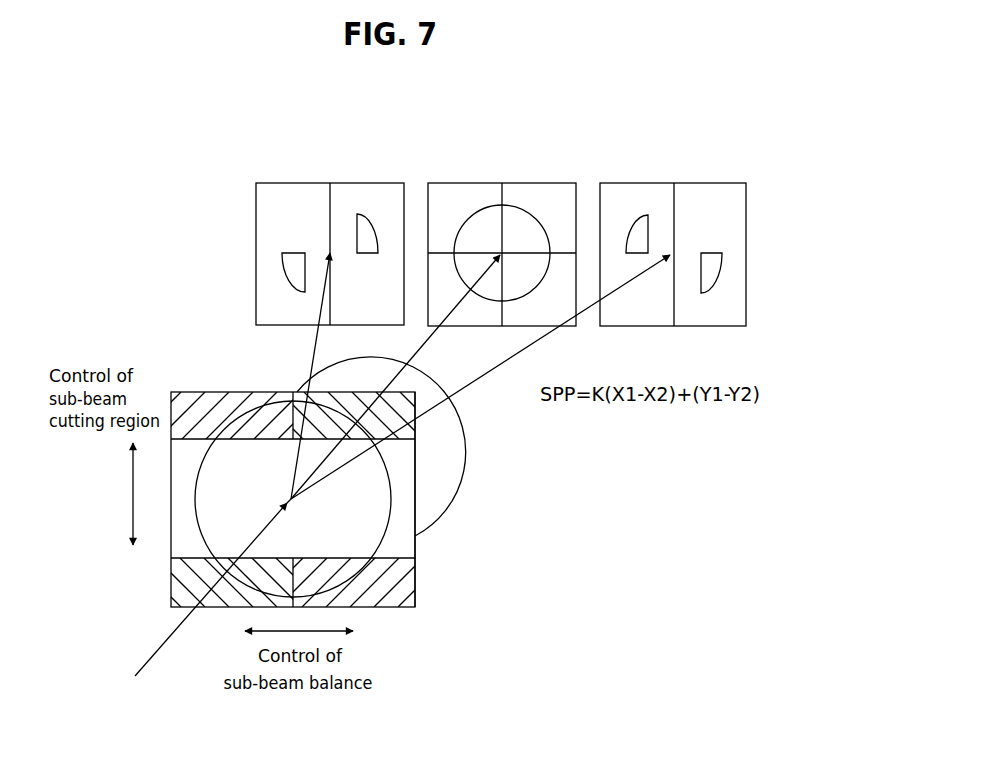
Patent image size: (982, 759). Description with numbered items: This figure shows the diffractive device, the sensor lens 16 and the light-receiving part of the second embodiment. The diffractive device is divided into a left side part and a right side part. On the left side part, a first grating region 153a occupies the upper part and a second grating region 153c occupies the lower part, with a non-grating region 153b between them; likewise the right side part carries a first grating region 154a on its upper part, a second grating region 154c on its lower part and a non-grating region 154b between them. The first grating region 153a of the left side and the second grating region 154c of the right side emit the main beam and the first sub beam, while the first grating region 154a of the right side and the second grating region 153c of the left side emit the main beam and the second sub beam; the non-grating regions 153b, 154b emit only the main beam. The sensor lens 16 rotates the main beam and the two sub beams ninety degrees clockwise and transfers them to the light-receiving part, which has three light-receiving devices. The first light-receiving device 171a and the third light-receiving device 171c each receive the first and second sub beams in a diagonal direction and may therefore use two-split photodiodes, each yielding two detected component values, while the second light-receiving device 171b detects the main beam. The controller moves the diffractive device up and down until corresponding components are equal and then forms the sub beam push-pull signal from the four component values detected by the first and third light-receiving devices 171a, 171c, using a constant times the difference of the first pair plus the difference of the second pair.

The sensor lens 16 is at (458, 472).
The first grating region 153a is at (214, 405).
The non-grating region 153b is at (172, 550).
The second grating region 153c is at (218, 602).
The first grating region 154a is at (415, 430).
The non-grating region 154b is at (410, 547).
The second grating region 154c is at (415, 592).
The first light-receiving device 171a is at (338, 183).
The second light-receiving device 171b is at (533, 183).
The third light-receiving device 171c is at (680, 183).